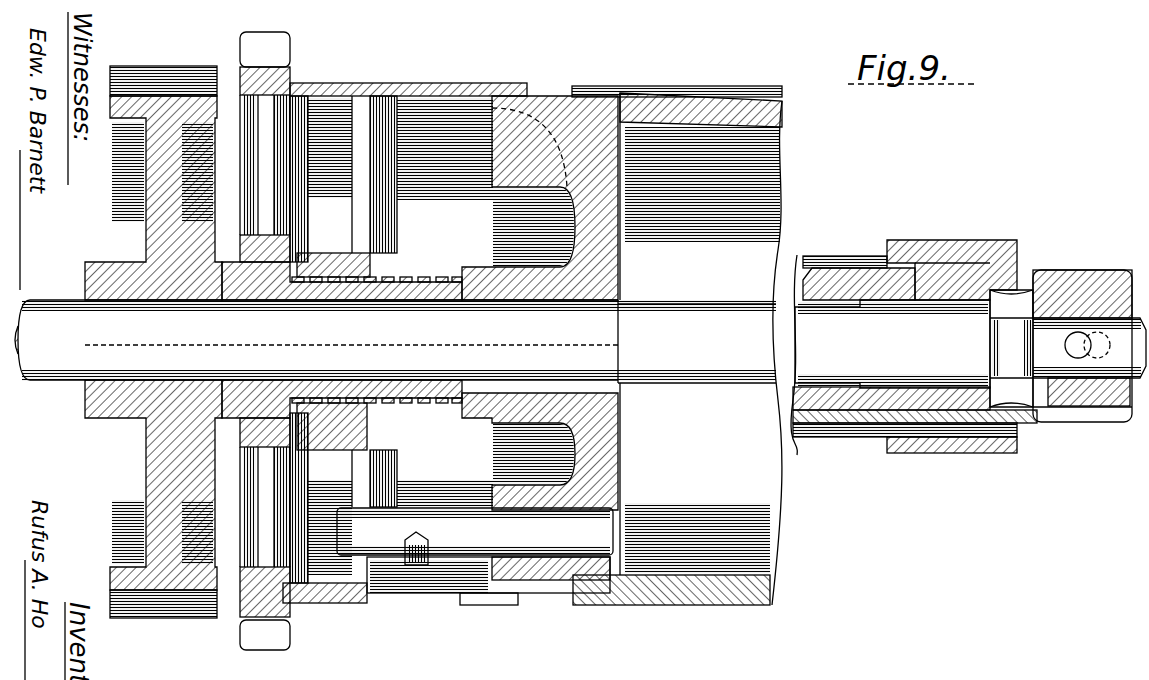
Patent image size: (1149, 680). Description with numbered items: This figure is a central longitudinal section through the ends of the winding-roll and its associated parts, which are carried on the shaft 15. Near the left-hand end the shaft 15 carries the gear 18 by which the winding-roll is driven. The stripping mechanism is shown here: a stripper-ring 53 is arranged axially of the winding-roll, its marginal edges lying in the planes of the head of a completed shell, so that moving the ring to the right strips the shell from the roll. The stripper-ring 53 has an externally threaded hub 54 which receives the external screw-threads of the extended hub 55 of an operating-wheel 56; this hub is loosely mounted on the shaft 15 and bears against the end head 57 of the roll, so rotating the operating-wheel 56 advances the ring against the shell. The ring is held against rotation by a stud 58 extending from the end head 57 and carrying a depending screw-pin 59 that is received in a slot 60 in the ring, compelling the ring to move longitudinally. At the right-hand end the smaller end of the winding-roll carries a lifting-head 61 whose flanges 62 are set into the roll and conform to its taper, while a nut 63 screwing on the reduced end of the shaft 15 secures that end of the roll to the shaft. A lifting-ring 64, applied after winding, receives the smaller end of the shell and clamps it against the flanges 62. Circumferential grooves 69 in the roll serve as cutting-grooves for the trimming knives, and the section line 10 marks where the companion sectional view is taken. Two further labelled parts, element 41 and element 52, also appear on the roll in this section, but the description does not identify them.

The section line 10 is at (480, 190).
The shaft 15 is at (580, 344).
The gear 18 is at (150, 70).
The casing 41 is at (706, 100).
The ring 52 is at (690, 595).
The stripper-ring 53 is at (378, 84).
The hub 54 is at (333, 339).
The extended hub 55 is at (425, 277).
The operating-wheel 56 is at (250, 40).
The end head 57 is at (539, 95).
The stud 58 is at (475, 531).
The screw-pin 59 is at (422, 556).
The slot 60 is at (463, 580).
The lifting-head 61 is at (1081, 274).
The flanges 62 is at (936, 262).
The nut 63 is at (1011, 348).
The lifting-ring 64 is at (947, 455).
The circumferential grooves 69 is at (572, 88).